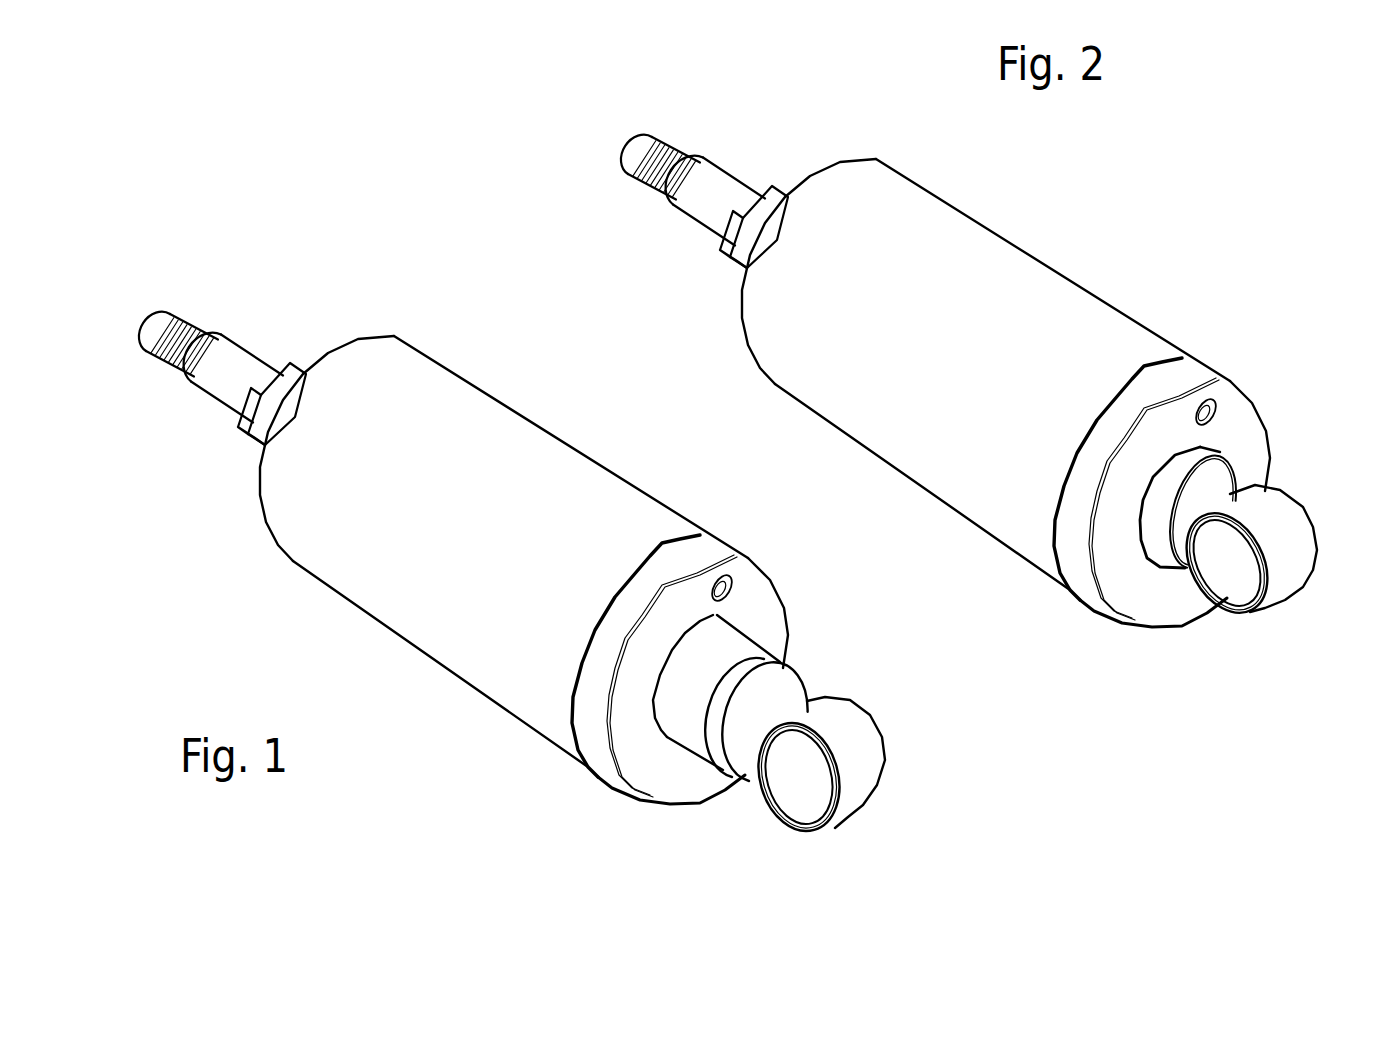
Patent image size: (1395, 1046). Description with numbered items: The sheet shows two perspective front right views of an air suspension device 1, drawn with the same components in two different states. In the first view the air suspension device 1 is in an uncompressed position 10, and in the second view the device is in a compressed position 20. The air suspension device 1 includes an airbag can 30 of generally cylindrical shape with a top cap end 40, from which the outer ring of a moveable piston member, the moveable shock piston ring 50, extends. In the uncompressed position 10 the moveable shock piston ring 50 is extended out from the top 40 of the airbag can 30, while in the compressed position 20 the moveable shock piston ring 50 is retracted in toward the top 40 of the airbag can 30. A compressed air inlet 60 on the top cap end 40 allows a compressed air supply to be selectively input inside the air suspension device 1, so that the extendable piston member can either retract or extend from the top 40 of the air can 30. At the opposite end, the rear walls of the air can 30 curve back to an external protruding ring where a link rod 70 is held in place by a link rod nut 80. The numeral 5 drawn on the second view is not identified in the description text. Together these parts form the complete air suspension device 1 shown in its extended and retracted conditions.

In FIG. 1, the air suspension device 1 is at (164, 470).
In FIG. 2, the air suspension device 1 is at (576, 200).
In FIG. 2, the seal ring 5 is at (1217, 477).
In FIG. 1, the uncompressed position 10 is at (457, 769).
In FIG. 2, the compressed position 20 is at (1186, 215).
In FIG. 1, the airbag can 30 is at (543, 464).
In FIG. 2, the airbag can 30 is at (1022, 540).
In FIG. 1, the top cap end 40 is at (655, 784).
In FIG. 2, the top cap end 40 is at (1157, 603).
In FIG. 1, the moveable shock piston ring 50 is at (857, 801).
In FIG. 2, the moveable shock piston ring 50 is at (1290, 532).
In FIG. 1, the compressed air inlet 60 is at (730, 580).
In FIG. 2, the compressed air inlet 60 is at (1213, 402).
In FIG. 1, the link rod 70 is at (245, 360).
In FIG. 2, the link rod 70 is at (720, 182).
In FIG. 2, the link rod nut 80 is at (783, 185).